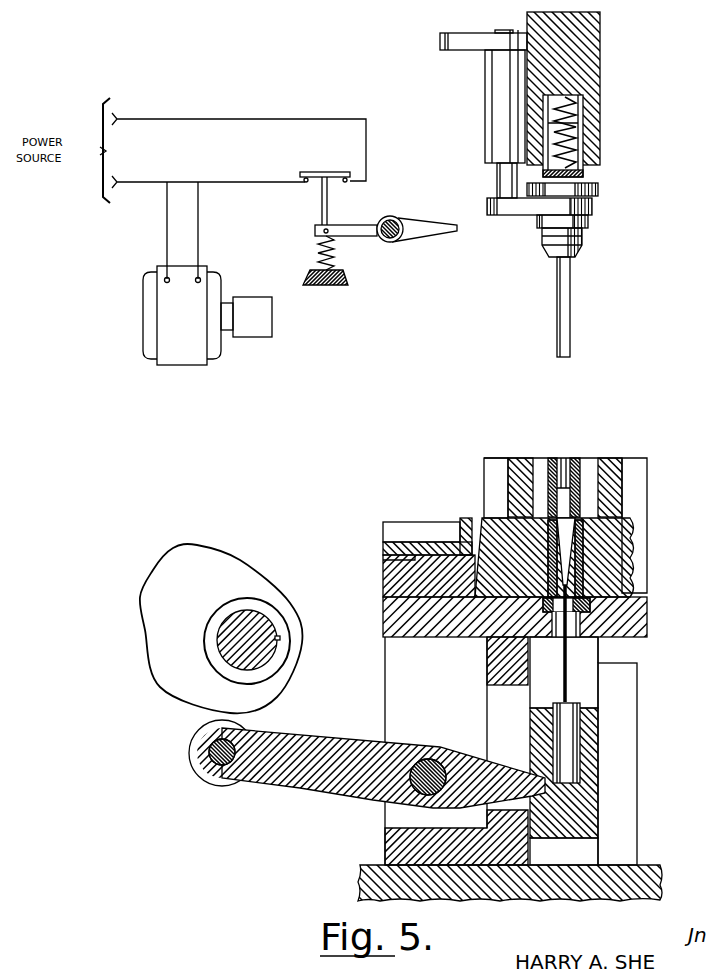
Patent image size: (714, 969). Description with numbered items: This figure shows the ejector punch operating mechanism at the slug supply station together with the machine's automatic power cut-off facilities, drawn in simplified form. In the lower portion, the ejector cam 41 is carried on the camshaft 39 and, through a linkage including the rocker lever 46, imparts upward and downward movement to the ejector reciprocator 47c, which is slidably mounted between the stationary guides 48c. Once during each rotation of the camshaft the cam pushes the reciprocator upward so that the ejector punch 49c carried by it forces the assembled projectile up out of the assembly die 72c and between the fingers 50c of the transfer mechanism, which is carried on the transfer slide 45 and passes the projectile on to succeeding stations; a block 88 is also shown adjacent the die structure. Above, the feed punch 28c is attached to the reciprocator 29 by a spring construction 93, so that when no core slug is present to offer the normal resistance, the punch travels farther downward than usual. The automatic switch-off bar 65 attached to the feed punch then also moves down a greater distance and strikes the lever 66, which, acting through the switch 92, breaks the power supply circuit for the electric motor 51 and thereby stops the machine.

The reciprocator 29 is at (585, 42).
The spring construction 93 is at (588, 154).
The automatic switch-off bar 65 is at (460, 42).
The feed punch 28c is at (570, 334).
The switch 92 is at (323, 173).
The lever 66 is at (430, 232).
The electric motor 51 is at (192, 356).
The transfer slide 45 is at (520, 457).
The fingers of the transfer mechanism 50c is at (578, 458).
The block 88 is at (403, 527).
The assembly die 72c is at (552, 562).
The ejector cam 41 is at (153, 585).
The camshaft 39 is at (233, 625).
The rocker lever 46 is at (297, 778).
The stationary guides 48c is at (497, 679).
The ejector punch 49c is at (571, 652).
The ejector reciprocator 47c is at (590, 827).